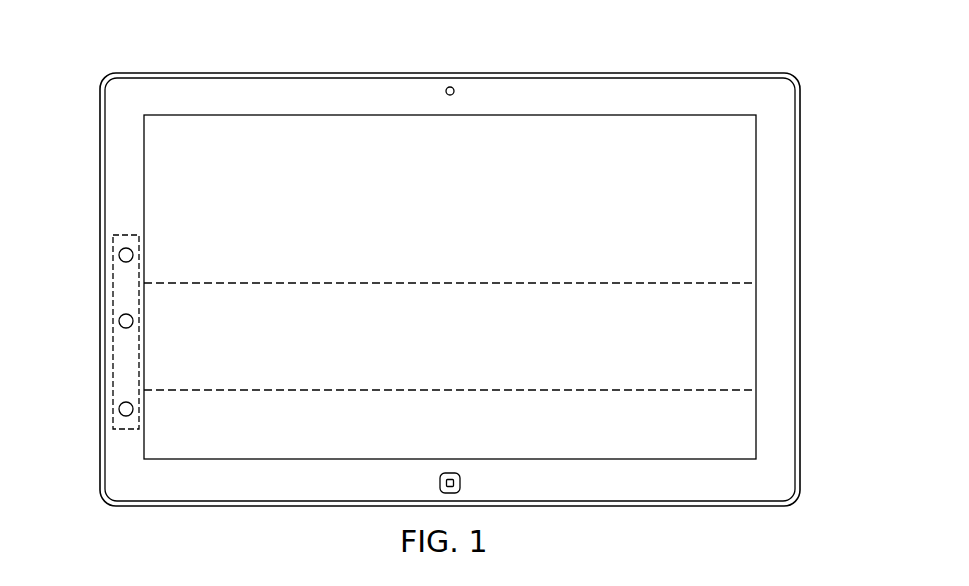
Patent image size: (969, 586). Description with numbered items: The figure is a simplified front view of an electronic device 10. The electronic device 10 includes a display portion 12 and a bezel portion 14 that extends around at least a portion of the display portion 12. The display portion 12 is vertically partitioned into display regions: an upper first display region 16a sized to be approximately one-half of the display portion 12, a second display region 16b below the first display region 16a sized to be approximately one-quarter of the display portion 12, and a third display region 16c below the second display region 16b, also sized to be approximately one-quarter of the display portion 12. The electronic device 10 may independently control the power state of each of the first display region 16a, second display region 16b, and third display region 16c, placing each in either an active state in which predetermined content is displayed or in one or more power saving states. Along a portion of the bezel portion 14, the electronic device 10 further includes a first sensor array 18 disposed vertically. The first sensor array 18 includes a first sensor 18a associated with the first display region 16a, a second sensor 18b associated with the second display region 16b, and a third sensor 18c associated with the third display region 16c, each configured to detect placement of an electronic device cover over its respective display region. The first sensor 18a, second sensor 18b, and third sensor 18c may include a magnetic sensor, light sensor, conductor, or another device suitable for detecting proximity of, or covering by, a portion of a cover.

The electronic device 10 is at (584, 64).
The display portion 12 is at (162, 141).
The bezel portion 14 is at (110, 172).
The first display region 16a is at (740, 205).
The second display region 16b is at (740, 334).
The third display region 16c is at (740, 428).
The first sensor array 18 is at (113, 366).
The first sensor 18a is at (118, 261).
The second sensor 18b is at (118, 329).
The third sensor 18c is at (120, 403).